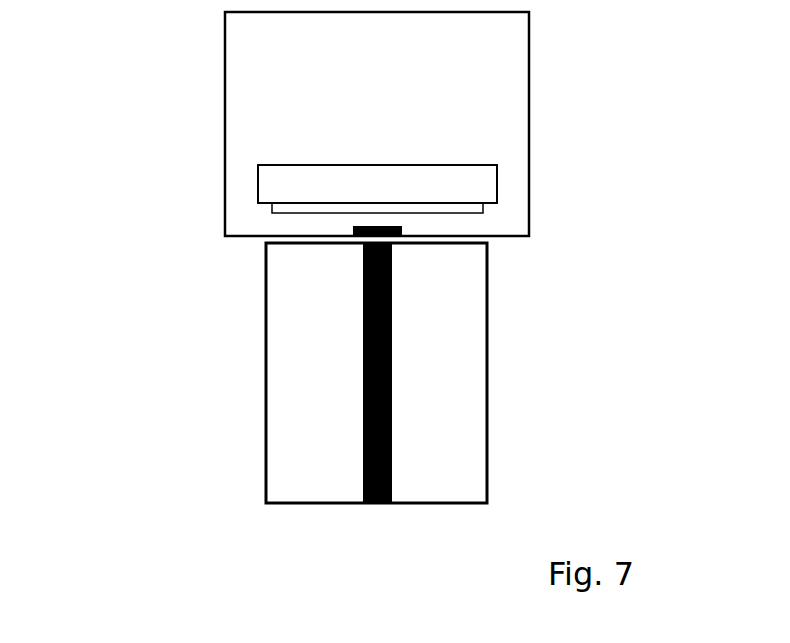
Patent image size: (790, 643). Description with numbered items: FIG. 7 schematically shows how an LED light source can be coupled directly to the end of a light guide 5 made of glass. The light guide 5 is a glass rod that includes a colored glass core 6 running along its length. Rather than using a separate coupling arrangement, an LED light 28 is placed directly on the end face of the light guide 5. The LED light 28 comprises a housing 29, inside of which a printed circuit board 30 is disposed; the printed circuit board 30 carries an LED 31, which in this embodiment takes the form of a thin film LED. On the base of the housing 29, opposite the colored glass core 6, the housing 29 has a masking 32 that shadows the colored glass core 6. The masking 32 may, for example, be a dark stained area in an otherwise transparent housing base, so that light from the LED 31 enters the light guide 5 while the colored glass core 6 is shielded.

The LED light 28 is at (375, 172).
The housing 29 is at (529, 88).
The printed circuit board 30 is at (473, 183).
The LED 31 is at (468, 206).
The masking 32 is at (402, 229).
The light guide 5 is at (432, 408).
The colored glass core 6 is at (362, 375).